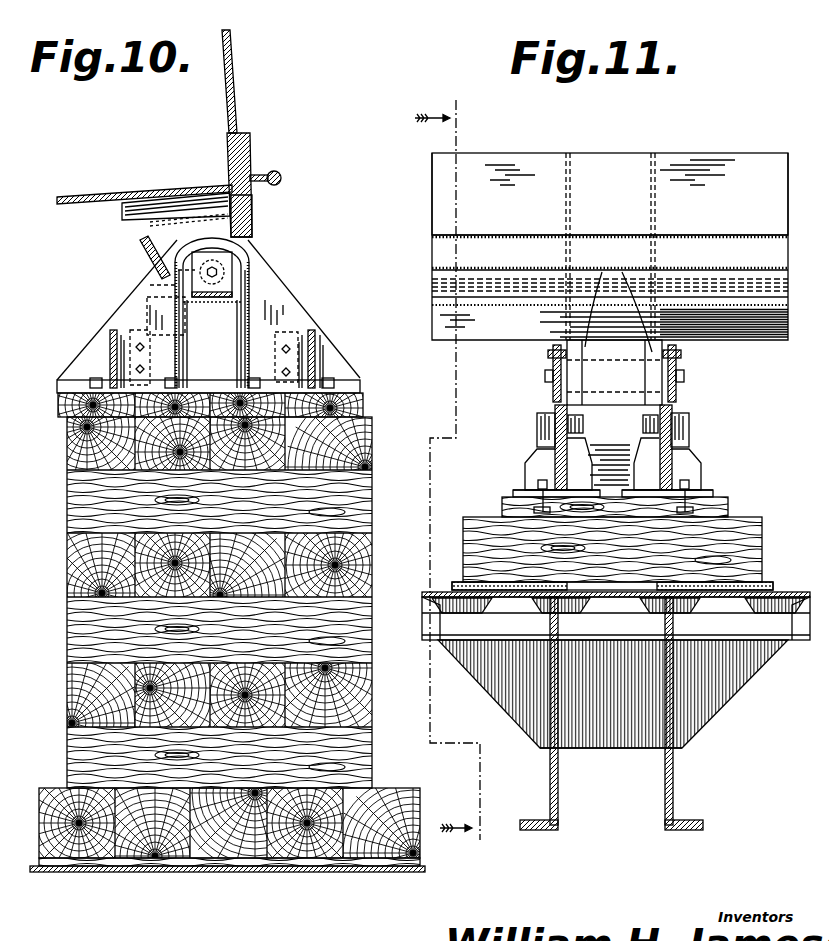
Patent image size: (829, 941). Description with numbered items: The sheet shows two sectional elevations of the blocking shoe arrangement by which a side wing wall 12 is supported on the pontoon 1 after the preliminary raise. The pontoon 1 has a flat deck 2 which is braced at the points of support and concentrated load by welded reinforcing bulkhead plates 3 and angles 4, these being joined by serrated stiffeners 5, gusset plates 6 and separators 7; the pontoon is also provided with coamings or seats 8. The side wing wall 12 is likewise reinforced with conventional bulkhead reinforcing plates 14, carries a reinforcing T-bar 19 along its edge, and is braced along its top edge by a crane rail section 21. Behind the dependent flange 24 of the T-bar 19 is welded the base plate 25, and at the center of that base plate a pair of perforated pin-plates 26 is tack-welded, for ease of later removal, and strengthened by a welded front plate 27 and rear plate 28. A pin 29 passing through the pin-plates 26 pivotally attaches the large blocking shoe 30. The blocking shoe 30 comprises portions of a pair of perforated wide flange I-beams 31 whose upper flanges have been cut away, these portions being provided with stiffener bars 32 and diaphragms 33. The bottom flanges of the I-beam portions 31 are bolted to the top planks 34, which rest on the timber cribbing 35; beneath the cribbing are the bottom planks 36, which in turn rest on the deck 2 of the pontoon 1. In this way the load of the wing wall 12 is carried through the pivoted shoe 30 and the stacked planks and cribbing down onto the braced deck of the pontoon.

In FIG. 10, the pontoon 1 is at (420, 873).
In FIG. 11, the pontoon 1 is at (422, 596).
In FIG. 10, the flat deck 2 is at (246, 824).
In FIG. 11, the flat deck 2 is at (786, 592).
In FIG. 11, the reinforcing bulkhead plates 3 is at (665, 770).
In FIG. 11, the angles 4 is at (667, 810).
In FIG. 11, the serrated stiffeners 5 is at (432, 622).
In FIG. 11, the gusset plates 6 is at (508, 697).
In FIG. 11, the separators 7 is at (604, 742).
In FIG. 11, the coamings or seats 8 is at (448, 475).
In FIG. 10, the side wing wall 12 is at (237, 112).
In FIG. 11, the side wing wall 12 is at (762, 165).
In FIG. 11, the bulkhead reinforcing plates 14 is at (648, 196).
In FIG. 10, the reinforcing T-bar 19 is at (228, 162).
In FIG. 11, the reinforcing T-bar 19 is at (440, 250).
In FIG. 10, the crane rail section 21 is at (283, 175).
In FIG. 11, the crane rail section 21 is at (440, 290).
In FIG. 10, the dependent flange 24 is at (253, 222).
In FIG. 11, the dependent flange 24 is at (776, 340).
In FIG. 10, the base plate 25 is at (118, 201).
In FIG. 10, the perforated pin-plates 26 is at (140, 226).
In FIG. 11, the perforated pin-plates 26 is at (618, 296).
In FIG. 10, the front plate 27 is at (242, 254).
In FIG. 11, the front plate 27 is at (642, 388).
In FIG. 10, the rear plate 28 is at (158, 261).
In FIG. 10, the pin 29 is at (146, 298).
In FIG. 11, the pin 29 is at (678, 374).
In FIG. 10, the blocking shoe 30 is at (316, 352).
In FIG. 11, the blocking shoe 30 is at (690, 478).
In FIG. 10, the perforated wide flange I-beams 31 is at (342, 384).
In FIG. 11, the perforated wide flange I-beams 31 is at (525, 472).
In FIG. 10, the stiffener bars 32 is at (115, 368).
In FIG. 11, the stiffener bars 32 is at (548, 440).
In FIG. 10, the diaphragms 33 is at (252, 336).
In FIG. 11, the diaphragms 33 is at (600, 462).
In FIG. 10, the top planks 34 is at (218, 405).
In FIG. 11, the top planks 34 is at (650, 510).
In FIG. 10, the timber cribbing 35 is at (225, 574).
In FIG. 11, the timber cribbing 35 is at (641, 549).
In FIG. 10, the bottom planks 36 is at (231, 889).
In FIG. 11, the bottom planks 36 is at (618, 618).